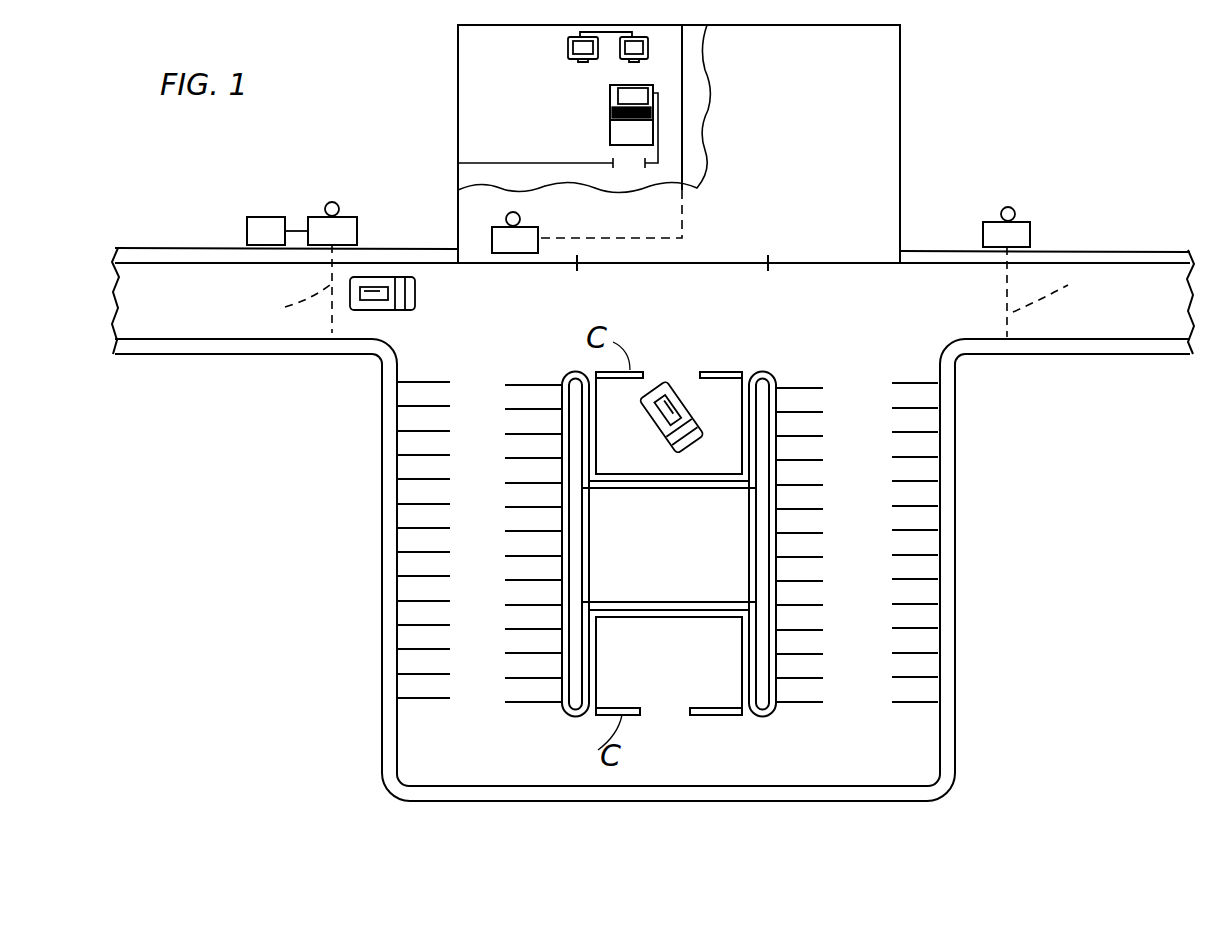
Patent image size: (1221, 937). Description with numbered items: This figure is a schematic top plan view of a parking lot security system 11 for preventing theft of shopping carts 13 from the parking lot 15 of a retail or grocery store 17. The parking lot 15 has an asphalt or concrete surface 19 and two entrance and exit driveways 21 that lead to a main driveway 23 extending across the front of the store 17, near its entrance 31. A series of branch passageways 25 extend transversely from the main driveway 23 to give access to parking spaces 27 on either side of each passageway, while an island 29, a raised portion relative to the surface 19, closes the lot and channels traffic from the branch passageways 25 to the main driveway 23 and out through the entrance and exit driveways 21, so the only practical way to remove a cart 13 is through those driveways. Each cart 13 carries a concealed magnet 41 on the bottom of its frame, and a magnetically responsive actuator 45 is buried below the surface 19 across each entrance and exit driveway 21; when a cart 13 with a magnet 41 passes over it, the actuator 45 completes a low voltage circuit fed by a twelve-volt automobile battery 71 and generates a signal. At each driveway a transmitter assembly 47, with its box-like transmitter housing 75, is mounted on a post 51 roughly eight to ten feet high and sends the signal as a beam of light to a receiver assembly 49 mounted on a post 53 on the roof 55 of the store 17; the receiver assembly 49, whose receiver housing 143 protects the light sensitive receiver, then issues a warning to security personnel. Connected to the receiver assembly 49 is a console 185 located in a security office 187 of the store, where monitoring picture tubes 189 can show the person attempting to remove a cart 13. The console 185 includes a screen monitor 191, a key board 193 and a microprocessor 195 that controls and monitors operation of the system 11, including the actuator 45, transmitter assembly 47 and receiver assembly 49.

The parking lot security system 11 is at (307, 175).
The shopping cart 13 is at (545, 333).
The parking lot 15 is at (668, 602).
The store 17 is at (900, 135).
The surface 19 is at (672, 303).
The entrance and exit driveways 21 is at (210, 323).
The main driveway 23 is at (782, 302).
The branch passageways 25 is at (473, 687).
The parking spaces 27 is at (435, 642).
The island 29 is at (527, 790).
The entrance 31 is at (660, 265).
The magnet 41 is at (375, 292).
The magnetically responsive actuator 45 is at (675, 291).
The transmitter assembly 47 is at (680, 228).
The receiver assembly 49 is at (561, 250).
The post 51 is at (623, 189).
The post 53 is at (522, 218).
The roof 55 is at (680, 156).
The automobile battery 71 is at (260, 232).
The transmitter housing 75 is at (357, 228).
The receiver housing 143 is at (512, 253).
The console 185 is at (662, 111).
The security office 187 is at (482, 107).
The monitoring picture tubes 189 is at (568, 50).
The screen monitor 191 is at (618, 96).
The key board 193 is at (613, 113).
The microprocessor 195 is at (598, 137).